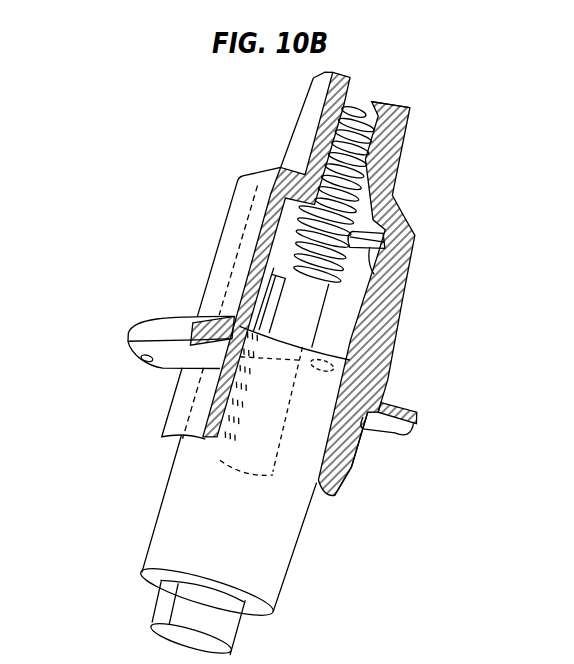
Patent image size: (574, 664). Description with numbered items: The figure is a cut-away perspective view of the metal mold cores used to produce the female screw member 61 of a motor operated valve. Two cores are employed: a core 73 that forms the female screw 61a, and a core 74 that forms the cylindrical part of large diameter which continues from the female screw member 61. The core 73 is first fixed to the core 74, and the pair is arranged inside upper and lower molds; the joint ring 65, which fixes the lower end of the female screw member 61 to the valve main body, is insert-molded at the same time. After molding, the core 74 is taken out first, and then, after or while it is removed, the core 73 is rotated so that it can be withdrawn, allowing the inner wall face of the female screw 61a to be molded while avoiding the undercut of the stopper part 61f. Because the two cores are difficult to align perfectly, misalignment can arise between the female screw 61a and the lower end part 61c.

The female screw member 61 is at (213, 249).
The female screw 61a is at (397, 132).
The stopper part 61f is at (389, 272).
The lower end part 61c is at (348, 455).
The joint ring 65 is at (157, 318).
The core 73 is at (300, 317).
The core 74 is at (158, 517).